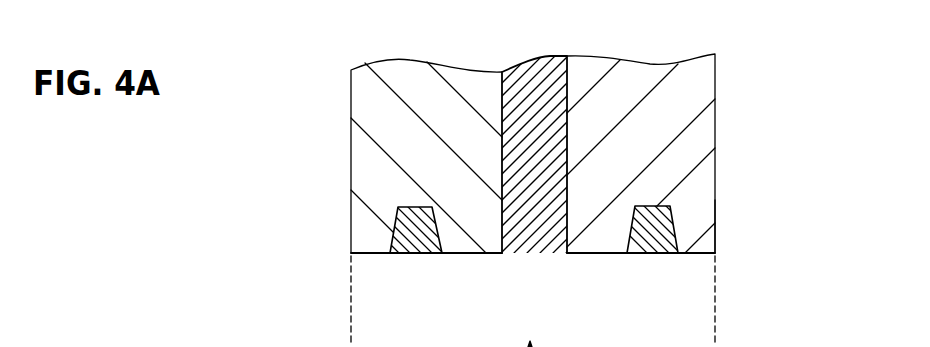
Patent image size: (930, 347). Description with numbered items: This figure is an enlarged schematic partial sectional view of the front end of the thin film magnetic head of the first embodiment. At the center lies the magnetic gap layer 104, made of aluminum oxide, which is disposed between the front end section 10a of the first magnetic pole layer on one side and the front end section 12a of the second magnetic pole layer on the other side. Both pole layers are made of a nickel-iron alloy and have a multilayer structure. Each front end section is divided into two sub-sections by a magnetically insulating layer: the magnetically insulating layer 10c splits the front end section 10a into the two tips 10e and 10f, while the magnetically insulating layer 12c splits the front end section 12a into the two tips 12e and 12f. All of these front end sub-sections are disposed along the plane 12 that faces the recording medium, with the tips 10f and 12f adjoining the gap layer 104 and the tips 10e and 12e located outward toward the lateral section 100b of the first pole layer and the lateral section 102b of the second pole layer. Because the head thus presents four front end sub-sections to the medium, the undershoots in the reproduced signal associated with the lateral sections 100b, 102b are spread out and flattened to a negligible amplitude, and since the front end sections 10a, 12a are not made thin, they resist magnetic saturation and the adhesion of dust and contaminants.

The front end section of the first magnetic pole layer 10a is at (352, 99).
The magnetically insulating layer 10c is at (406, 207).
The tip 10e is at (352, 212).
The lateral section of the first magnetic pole layer 100b is at (352, 242).
The tip 10f is at (486, 243).
The magnetic gap layer 104 is at (542, 68).
The front end section of the second magnetic pole layer 12a is at (712, 100).
The magnetically insulating layer 12c is at (662, 206).
The tip 12e is at (707, 212).
The lateral section of the second magnetic pole layer 102b is at (717, 242).
The tip 12f is at (580, 243).
The plane facing the recording medium 12 is at (722, 257).